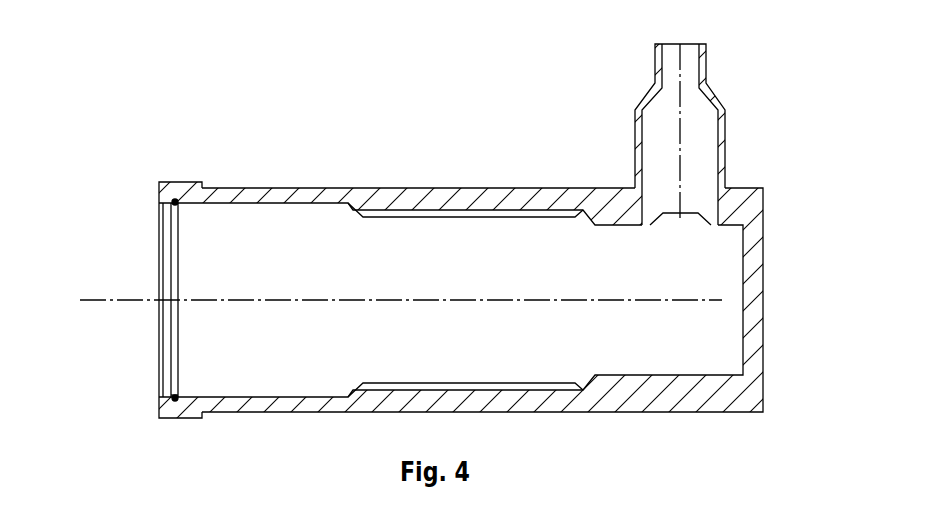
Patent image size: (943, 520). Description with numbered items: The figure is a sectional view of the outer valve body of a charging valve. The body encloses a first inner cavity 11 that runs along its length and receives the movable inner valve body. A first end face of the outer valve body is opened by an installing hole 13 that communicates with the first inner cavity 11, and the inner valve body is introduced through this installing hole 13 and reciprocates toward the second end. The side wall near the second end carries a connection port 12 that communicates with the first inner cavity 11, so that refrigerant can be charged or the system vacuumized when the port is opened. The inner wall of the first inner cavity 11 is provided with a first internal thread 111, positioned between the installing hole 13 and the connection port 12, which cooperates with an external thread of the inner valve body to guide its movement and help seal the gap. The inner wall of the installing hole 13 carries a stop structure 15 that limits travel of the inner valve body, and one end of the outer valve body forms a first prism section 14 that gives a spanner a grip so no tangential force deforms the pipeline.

The first inner cavity 11 is at (328, 258).
The first internal thread 111 is at (448, 212).
The connection port 12 is at (686, 60).
The installing hole 13 is at (162, 255).
The first prism section 14 is at (192, 188).
The stop structure 15 is at (175, 200).